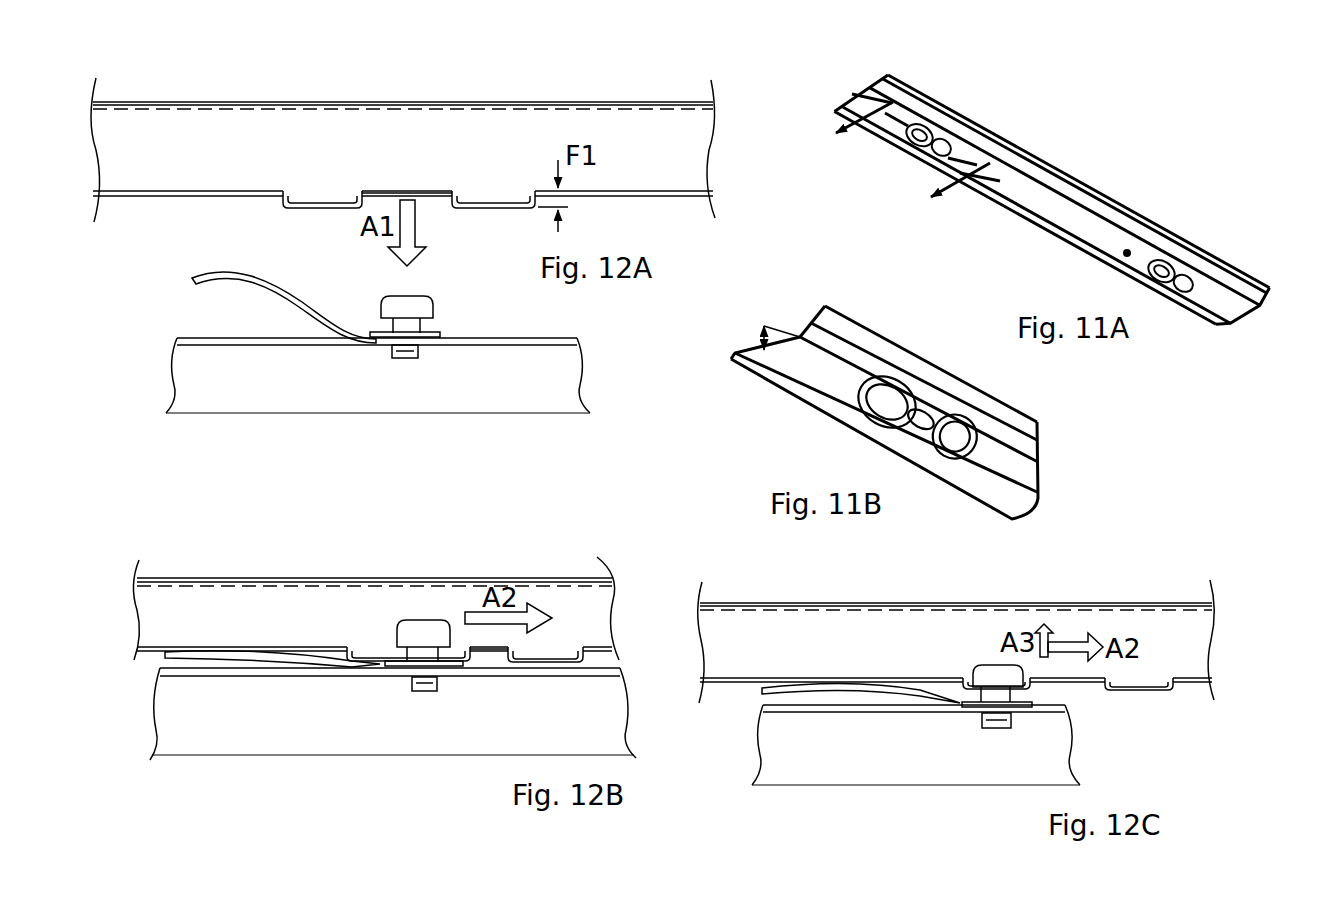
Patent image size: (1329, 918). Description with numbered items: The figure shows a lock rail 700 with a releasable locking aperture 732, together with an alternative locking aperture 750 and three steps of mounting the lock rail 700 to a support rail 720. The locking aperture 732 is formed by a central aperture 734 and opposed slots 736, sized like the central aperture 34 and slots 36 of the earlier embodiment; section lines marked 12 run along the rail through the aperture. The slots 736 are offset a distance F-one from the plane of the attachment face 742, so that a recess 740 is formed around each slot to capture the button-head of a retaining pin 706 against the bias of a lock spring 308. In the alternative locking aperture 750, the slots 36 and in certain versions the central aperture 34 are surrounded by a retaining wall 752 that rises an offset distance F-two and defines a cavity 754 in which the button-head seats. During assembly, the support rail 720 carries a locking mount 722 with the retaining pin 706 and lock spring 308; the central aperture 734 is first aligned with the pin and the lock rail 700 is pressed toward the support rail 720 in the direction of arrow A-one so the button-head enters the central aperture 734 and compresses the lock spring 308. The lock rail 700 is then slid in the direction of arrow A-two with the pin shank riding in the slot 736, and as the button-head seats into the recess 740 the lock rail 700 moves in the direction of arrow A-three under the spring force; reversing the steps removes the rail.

In FIG. 12A, the lock rail 700 is at (498, 92).
In FIG. 11A, the lock rail 700 is at (1030, 191).
In FIG. 12B, the lock rail 700 is at (344, 547).
In FIG. 12C, the lock rail 700 is at (1105, 556).
In FIG. 11A, the locking aperture 732 is at (977, 114).
In FIG. 12A, the central aperture 734 is at (404, 188).
In FIG. 11A, the central aperture 734 is at (949, 138).
In FIG. 12B, the central aperture 734 is at (462, 647).
In FIG. 12A, the slots 736 is at (334, 198).
In FIG. 11A, the slots 736 is at (908, 130).
In FIG. 12B, the slots 736 is at (393, 652).
In FIG. 12A, the recess 740 is at (292, 191).
In FIG. 11A, the recess 740 is at (1200, 282).
In FIG. 12B, the recess 740 is at (581, 647).
In FIG. 12A, the attachment face 742 is at (672, 198).
In FIG. 12B, the attachment face 742 is at (147, 646).
In FIG. 12C, the attachment face 742 is at (1199, 686).
In FIG. 11B, the locking aperture 750 is at (909, 409).
In FIG. 11B, the retaining wall 752 is at (911, 409).
In FIG. 11B, the cavity 754 is at (964, 432).
In FIG. 11B, the central aperture 34 is at (907, 428).
In FIG. 11B, the slots 36 is at (891, 397).
In FIG. 11A, the section line 12 is at (895, 158).
In FIG. 12A, the locking mount 722 is at (345, 300).
In FIG. 12C, the locking mount 722 is at (897, 645).
In FIG. 12A, the lock spring 308 is at (268, 293).
In FIG. 12B, the lock spring 308 is at (208, 657).
In FIG. 12A, the retaining pin 706 is at (413, 304).
In FIG. 12B, the retaining pin 706 is at (436, 634).
In FIG. 12C, the retaining pin 706 is at (983, 676).
In FIG. 12A, the support rail 720 is at (313, 346).
In FIG. 12B, the support rail 720 is at (281, 706).
In FIG. 12C, the support rail 720 is at (848, 716).